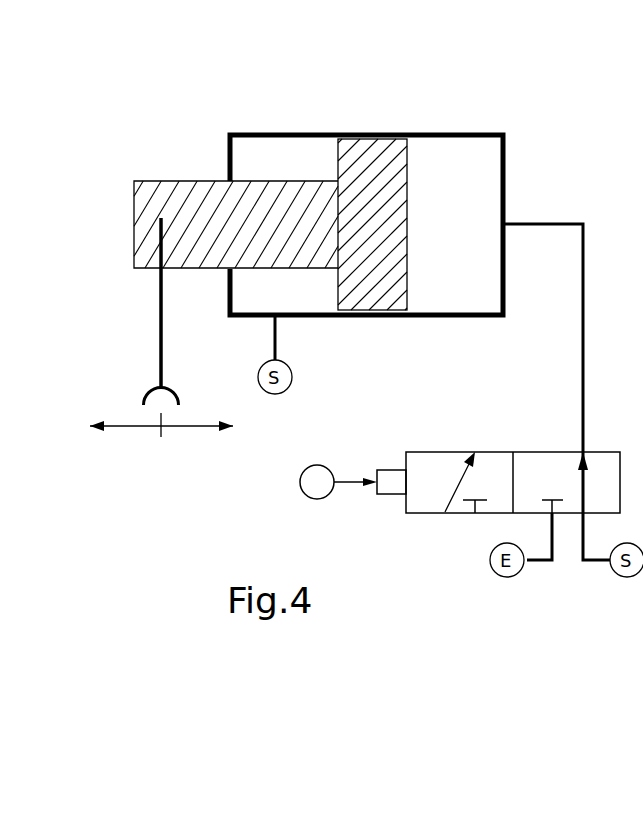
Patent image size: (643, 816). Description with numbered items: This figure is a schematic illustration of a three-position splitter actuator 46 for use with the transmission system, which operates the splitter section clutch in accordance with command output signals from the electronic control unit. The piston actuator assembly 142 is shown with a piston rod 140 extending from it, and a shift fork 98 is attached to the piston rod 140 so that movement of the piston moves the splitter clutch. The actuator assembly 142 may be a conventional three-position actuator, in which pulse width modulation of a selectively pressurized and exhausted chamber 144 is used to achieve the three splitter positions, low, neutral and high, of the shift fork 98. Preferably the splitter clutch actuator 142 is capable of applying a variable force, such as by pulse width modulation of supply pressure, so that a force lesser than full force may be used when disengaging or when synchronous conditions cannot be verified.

The splitter actuator 46 is at (112, 217).
The shift fork 98 is at (158, 320).
The piston rod 140 is at (193, 203).
The piston actuator assembly 142 is at (374, 118).
The selectively pressurized and exhausted chamber 144 is at (475, 158).